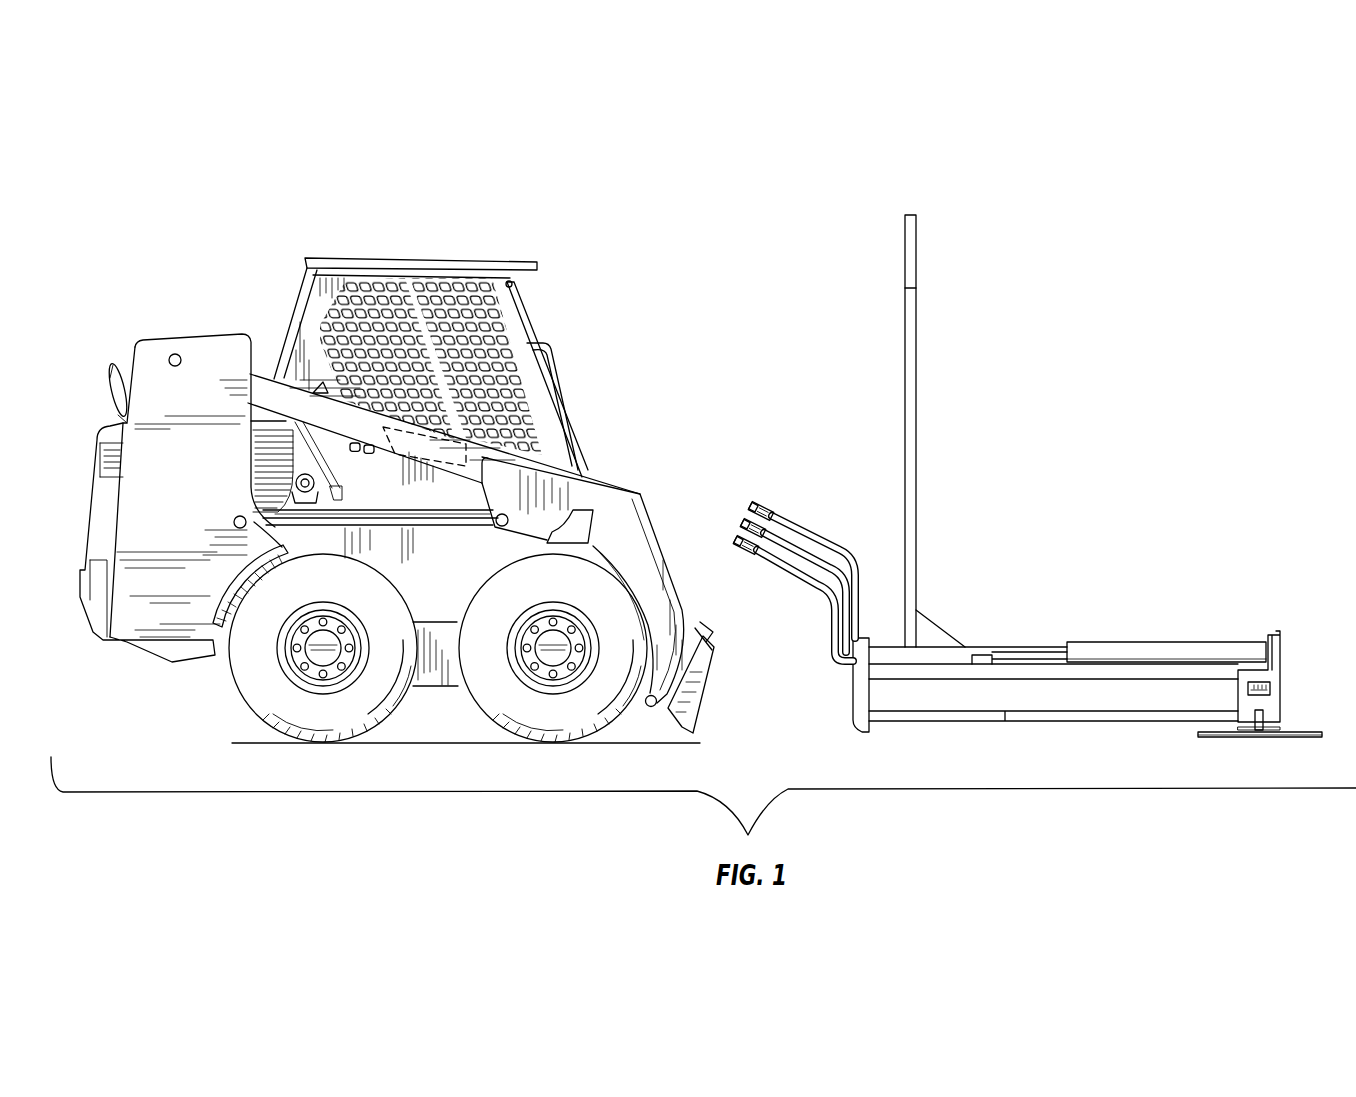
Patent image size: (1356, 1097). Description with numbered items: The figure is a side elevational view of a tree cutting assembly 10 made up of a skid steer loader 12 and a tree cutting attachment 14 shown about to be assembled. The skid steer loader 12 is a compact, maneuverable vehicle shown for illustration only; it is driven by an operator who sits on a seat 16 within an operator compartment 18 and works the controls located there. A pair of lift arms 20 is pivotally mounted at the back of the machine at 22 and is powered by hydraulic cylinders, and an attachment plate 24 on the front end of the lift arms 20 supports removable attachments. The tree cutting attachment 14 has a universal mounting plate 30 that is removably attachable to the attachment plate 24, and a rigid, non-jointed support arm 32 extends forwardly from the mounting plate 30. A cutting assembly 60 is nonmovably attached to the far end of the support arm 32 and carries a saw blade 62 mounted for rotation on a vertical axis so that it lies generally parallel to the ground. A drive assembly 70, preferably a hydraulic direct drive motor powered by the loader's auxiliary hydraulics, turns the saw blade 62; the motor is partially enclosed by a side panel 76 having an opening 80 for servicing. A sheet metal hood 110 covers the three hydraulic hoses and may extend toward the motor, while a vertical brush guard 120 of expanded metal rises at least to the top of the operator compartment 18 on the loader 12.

The tree cutting assembly 10 is at (894, 182).
The skid steer loader 12 is at (440, 259).
The tree cutting attachment 14 is at (906, 321).
The seat 16 is at (325, 328).
The operator compartment 18 is at (504, 325).
The lift arms 20 is at (648, 512).
The lift arm pivot 22 is at (174, 348).
The attachment plate 24 is at (692, 688).
The mounting plate 30 is at (858, 700).
The support arm 32 is at (1022, 723).
The cutting assembly 60 is at (1306, 732).
The saw blade 62 is at (1208, 739).
The drive assembly 70 is at (1281, 682).
The side panel 76 is at (1262, 731).
The opening 80 is at (1256, 682).
The hood 110 is at (1118, 641).
The brush guard 120 is at (919, 458).